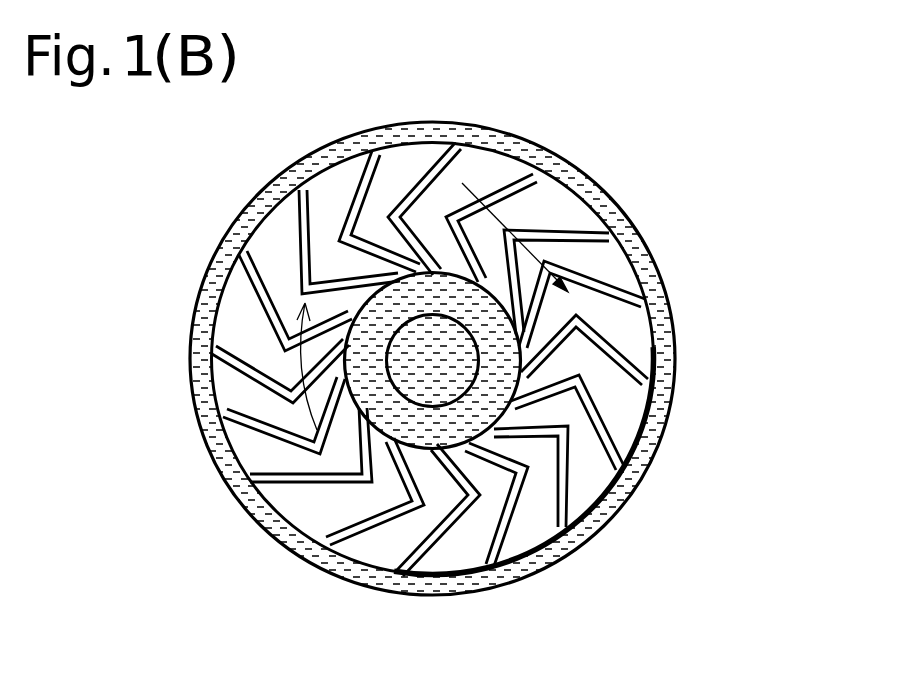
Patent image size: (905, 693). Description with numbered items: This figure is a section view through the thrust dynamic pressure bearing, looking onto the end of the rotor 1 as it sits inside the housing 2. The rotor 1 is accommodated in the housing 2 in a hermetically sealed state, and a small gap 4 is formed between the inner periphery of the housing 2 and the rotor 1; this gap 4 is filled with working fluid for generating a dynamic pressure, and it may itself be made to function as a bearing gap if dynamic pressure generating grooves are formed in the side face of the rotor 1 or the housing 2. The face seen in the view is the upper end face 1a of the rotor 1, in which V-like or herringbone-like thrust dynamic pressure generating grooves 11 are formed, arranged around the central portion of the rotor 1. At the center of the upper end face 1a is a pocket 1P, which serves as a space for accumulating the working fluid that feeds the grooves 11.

The rotor 1 is at (637, 262).
The upper end face 1a is at (590, 482).
The pocket 1P is at (443, 383).
The housing 2 is at (590, 177).
The gap 4 is at (512, 150).
The thrust dynamic pressure generating grooves 11 is at (303, 227).